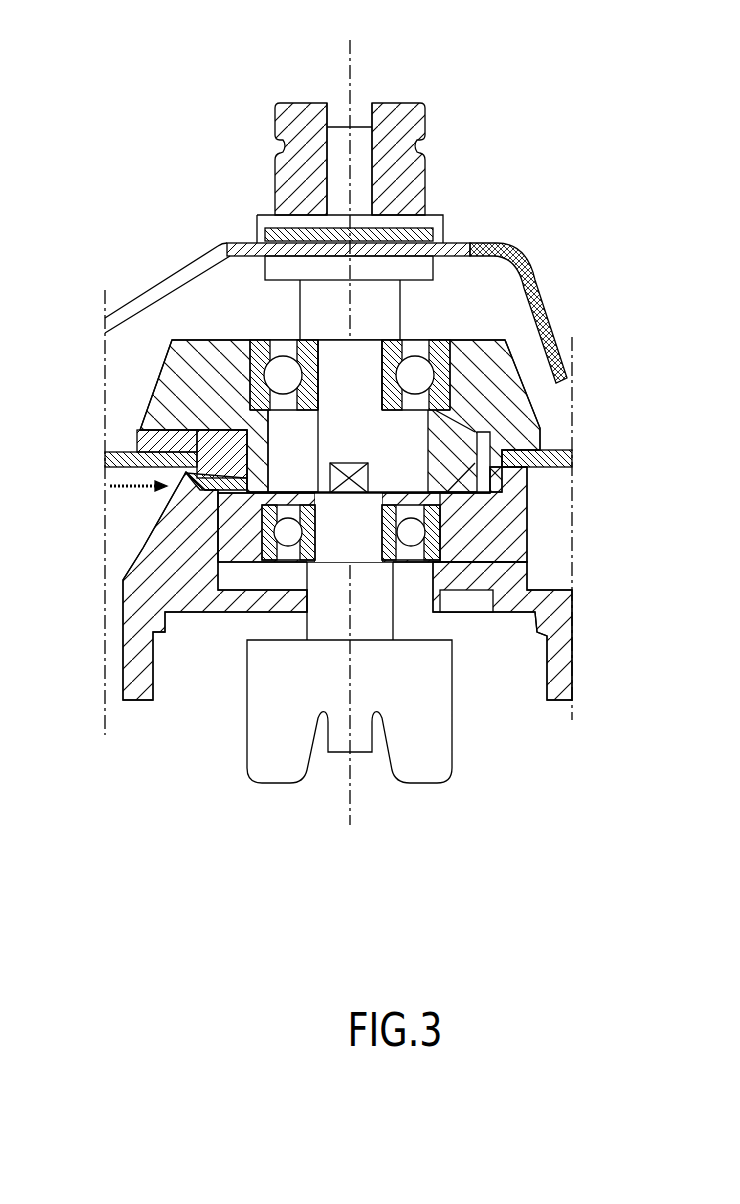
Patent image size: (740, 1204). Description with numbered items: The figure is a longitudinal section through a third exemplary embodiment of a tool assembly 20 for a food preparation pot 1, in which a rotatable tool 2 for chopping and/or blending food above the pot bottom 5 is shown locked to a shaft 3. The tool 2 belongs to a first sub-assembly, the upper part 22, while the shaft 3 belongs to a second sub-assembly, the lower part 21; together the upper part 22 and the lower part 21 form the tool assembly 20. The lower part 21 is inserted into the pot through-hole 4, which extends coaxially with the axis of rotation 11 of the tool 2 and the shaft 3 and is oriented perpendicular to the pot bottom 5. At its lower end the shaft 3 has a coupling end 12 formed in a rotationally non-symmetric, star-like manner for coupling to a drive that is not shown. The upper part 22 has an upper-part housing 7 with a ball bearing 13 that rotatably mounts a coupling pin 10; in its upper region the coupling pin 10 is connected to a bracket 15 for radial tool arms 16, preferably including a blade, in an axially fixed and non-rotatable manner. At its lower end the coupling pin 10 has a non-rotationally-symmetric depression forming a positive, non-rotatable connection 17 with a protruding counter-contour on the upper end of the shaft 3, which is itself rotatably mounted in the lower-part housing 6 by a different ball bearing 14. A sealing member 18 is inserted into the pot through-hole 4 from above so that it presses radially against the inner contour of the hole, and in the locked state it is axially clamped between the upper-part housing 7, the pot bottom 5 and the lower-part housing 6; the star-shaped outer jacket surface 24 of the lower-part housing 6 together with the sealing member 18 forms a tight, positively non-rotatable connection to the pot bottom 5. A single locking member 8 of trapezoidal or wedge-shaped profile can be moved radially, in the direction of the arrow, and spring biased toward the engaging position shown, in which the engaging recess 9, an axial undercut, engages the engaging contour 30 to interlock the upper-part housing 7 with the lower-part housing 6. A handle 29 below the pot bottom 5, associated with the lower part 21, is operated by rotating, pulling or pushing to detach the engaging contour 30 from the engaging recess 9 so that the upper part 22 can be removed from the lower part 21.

The food preparation pot 1 is at (107, 463).
The rotatable tool 2 is at (565, 183).
The shaft 3 is at (341, 541).
The pot through-hole 4 is at (108, 453).
The pot bottom 5 is at (559, 448).
The lower-part housing 6 is at (460, 508).
The upper-part housing 7 is at (498, 388).
The locking member 8 is at (187, 475).
The engaging recess 9 is at (252, 488).
The coupling pin 10 is at (364, 331).
The axis of rotation 11 is at (348, 806).
The coupling end 12 is at (443, 722).
The ball bearing 13 is at (282, 368).
The ball bearing 14 is at (437, 552).
The bracket 15 is at (400, 165).
The tool arms 16 is at (475, 245).
The positive, non-rotatable connection 17 is at (368, 461).
The sealing member 18 is at (143, 427).
The tool assembly 20 is at (236, 848).
The lower part 21 is at (565, 800).
The upper part 22 is at (155, 103).
The outer jacket surface 24 is at (528, 522).
The handle 29 is at (135, 667).
The engaging contour 30 is at (262, 464).